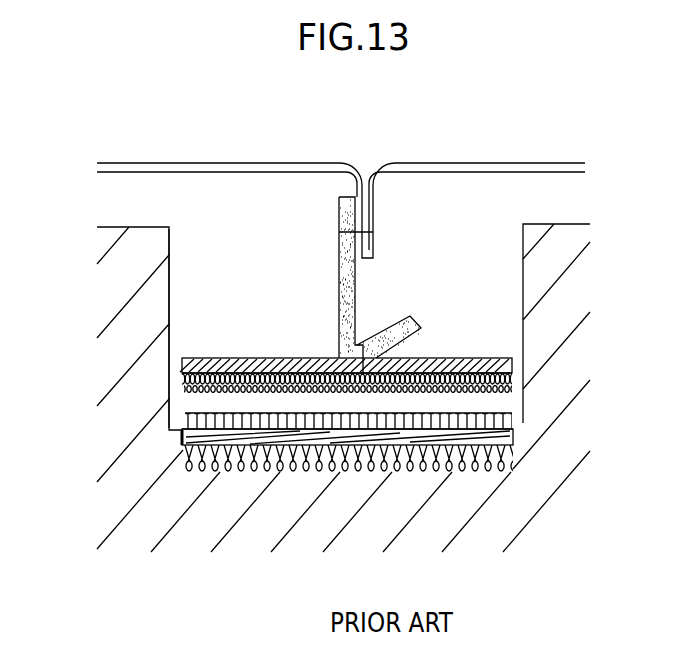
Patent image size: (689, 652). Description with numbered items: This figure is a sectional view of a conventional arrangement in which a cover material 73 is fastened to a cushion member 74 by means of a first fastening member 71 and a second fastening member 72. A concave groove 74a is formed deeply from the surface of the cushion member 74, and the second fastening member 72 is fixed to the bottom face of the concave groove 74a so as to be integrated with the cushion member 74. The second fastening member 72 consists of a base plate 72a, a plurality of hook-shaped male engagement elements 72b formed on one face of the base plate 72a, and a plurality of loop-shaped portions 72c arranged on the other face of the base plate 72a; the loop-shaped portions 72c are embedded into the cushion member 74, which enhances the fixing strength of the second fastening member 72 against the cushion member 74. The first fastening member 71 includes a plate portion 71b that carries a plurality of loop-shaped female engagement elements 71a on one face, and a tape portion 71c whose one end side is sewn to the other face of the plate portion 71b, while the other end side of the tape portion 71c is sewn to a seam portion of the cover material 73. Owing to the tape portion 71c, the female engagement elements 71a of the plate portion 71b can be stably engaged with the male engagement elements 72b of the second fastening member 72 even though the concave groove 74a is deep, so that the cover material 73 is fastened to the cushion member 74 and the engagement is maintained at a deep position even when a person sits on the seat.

The cover material 73 is at (467, 163).
The cushion member 74 is at (125, 358).
The concave groove 74a is at (173, 265).
The first fastening member 71 is at (271, 358).
The loop-shaped female engagement elements 71a is at (510, 387).
The plate portion 71b is at (467, 363).
The tape portion 71c is at (400, 326).
The second fastening member 72 is at (180, 440).
The base plate 72a is at (513, 440).
The hook-shaped male engagement elements 72b is at (512, 425).
The loop-shaped portions 72c is at (513, 467).